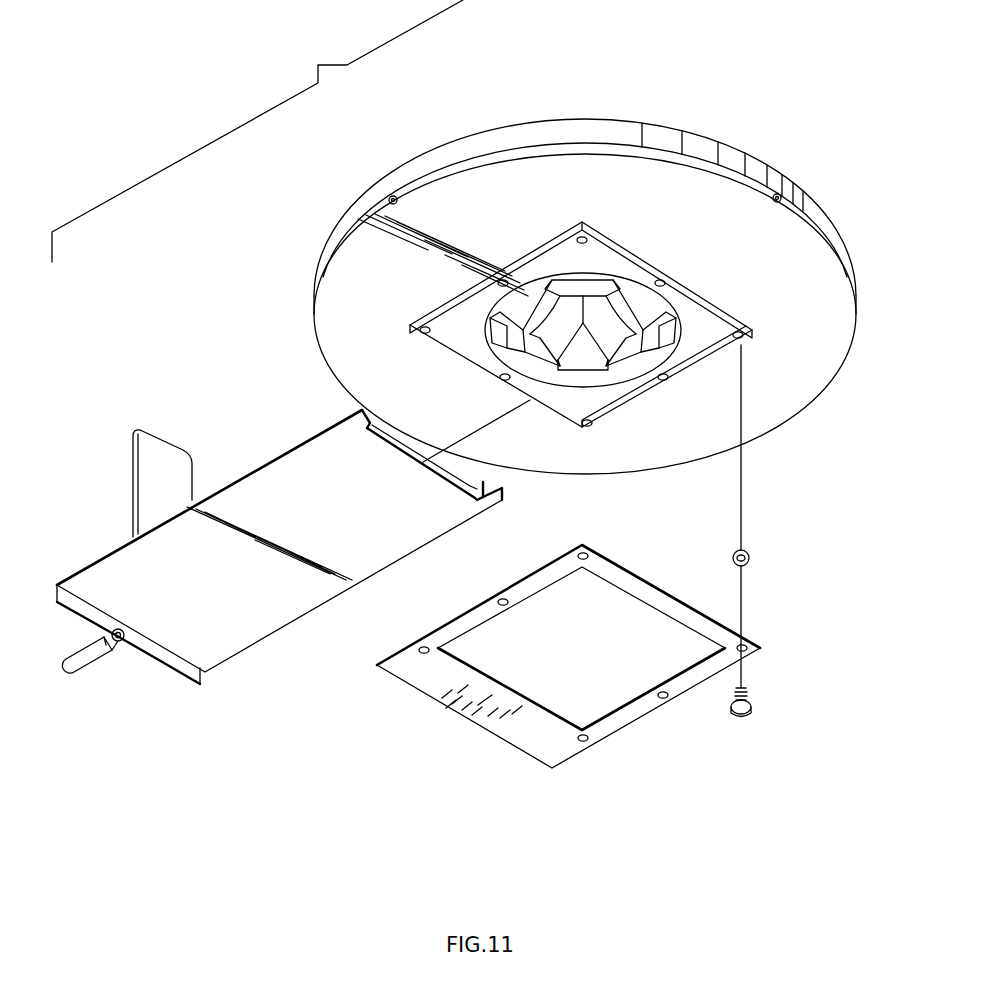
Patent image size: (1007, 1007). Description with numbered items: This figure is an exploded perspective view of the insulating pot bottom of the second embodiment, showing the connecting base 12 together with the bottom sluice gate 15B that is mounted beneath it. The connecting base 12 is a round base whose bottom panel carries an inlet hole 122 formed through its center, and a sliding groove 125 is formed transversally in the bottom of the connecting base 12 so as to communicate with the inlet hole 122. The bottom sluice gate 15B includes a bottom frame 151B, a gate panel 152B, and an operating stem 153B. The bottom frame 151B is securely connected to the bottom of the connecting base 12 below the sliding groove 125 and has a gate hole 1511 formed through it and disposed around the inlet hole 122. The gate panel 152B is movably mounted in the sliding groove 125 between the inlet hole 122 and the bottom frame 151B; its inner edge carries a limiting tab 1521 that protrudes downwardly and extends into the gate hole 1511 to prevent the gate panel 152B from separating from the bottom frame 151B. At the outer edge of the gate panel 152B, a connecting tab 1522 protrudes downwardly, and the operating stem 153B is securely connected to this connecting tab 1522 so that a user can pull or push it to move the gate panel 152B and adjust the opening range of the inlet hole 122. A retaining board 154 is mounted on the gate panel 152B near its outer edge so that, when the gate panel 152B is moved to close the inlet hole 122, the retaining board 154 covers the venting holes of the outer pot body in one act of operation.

The connecting base 12 is at (432, 160).
The sliding groove 125 is at (712, 300).
The inlet hole 122 is at (597, 373).
The retaining board 154 is at (160, 452).
The limiting tab 1521 is at (483, 482).
The gate panel 152B is at (257, 640).
The connecting tab 1522 is at (190, 676).
The operating stem 153B is at (88, 657).
The bottom frame 151B is at (480, 740).
The gate hole 1511 is at (618, 700).
The bottom sluice gate 15B is at (296, 777).